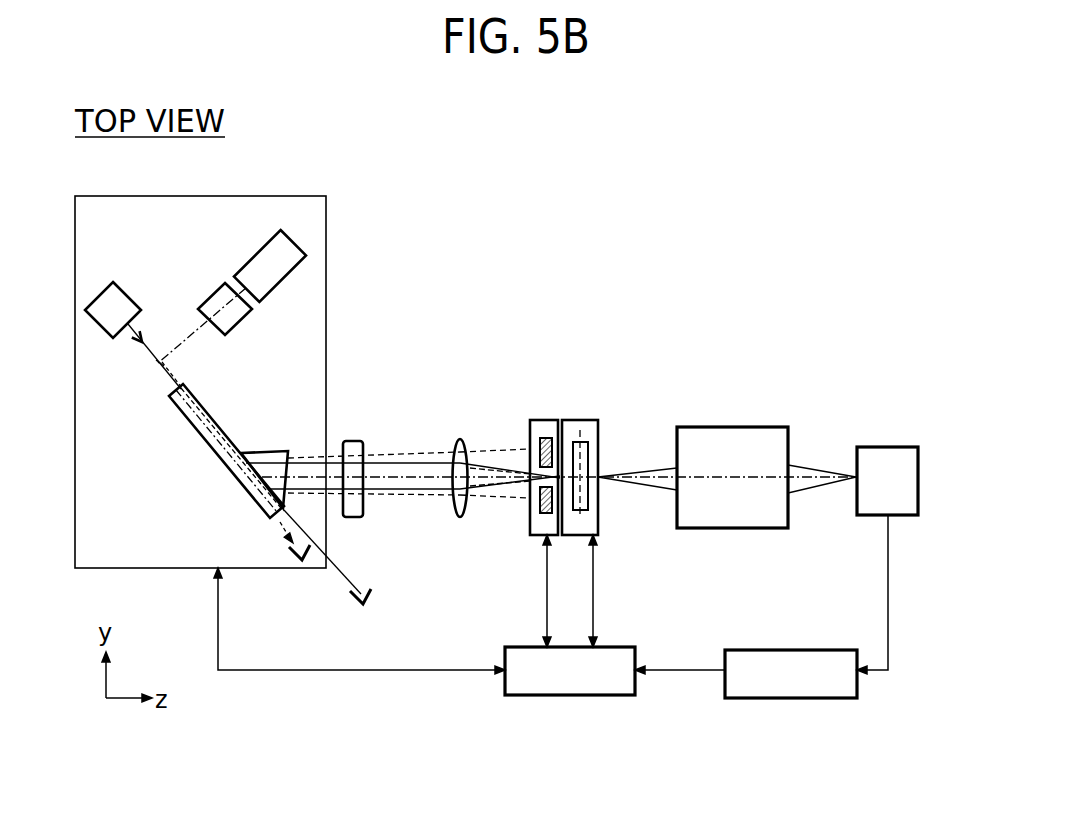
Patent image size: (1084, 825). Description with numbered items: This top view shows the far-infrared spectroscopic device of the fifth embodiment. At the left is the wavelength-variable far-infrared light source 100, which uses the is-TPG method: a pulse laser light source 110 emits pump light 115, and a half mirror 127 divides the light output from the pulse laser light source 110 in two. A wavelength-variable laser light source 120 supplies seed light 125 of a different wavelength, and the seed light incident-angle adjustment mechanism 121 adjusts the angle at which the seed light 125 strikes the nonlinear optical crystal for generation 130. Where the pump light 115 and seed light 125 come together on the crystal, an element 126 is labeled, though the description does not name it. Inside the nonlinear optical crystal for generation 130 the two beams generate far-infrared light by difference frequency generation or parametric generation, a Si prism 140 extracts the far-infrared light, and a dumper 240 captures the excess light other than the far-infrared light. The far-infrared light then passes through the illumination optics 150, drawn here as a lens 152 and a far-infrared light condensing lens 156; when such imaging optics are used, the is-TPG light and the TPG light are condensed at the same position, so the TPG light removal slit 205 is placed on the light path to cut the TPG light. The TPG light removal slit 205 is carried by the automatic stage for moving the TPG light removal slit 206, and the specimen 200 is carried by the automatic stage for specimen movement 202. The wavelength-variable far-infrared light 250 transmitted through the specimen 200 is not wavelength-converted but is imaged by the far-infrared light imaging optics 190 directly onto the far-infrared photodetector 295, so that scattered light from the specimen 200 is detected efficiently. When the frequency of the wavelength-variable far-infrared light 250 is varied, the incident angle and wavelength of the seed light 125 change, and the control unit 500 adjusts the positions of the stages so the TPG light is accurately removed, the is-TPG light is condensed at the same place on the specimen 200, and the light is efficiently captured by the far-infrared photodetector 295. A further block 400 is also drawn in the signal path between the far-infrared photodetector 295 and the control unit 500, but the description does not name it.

The wavelength-variable far-infrared light source 100 is at (332, 240).
The pulse laser light source 110 is at (105, 289).
The pump light 115 is at (147, 358).
The wavelength-variable laser light source 120 is at (255, 256).
The seed light incident-angle adjustment mechanism 121 is at (211, 296).
The seed light 125 is at (176, 382).
The combining point 126 is at (158, 362).
The half mirror 127 is at (135, 338).
The nonlinear optical crystal for generation 130 is at (198, 430).
The Si prism 140 is at (260, 448).
The illumination optics 150 is at (492, 378).
The lens 152 is at (353, 438).
The far-infrared light condensing lens 156 is at (457, 437).
The far-infrared light imaging optics 190 is at (725, 427).
The specimen 200 is at (566, 457).
The automatic stage for specimen movement 202 is at (583, 419).
The TPG light removal slit 205 is at (533, 508).
The automatic stage for moving the TPG light removal slit 206 is at (506, 455).
The dumper 240 is at (288, 558).
The wavelength-variable far-infrared light 250 is at (637, 470).
The far-infrared photodetector 295 is at (888, 447).
The signal processing unit 400 is at (790, 650).
The control unit 500 is at (520, 647).